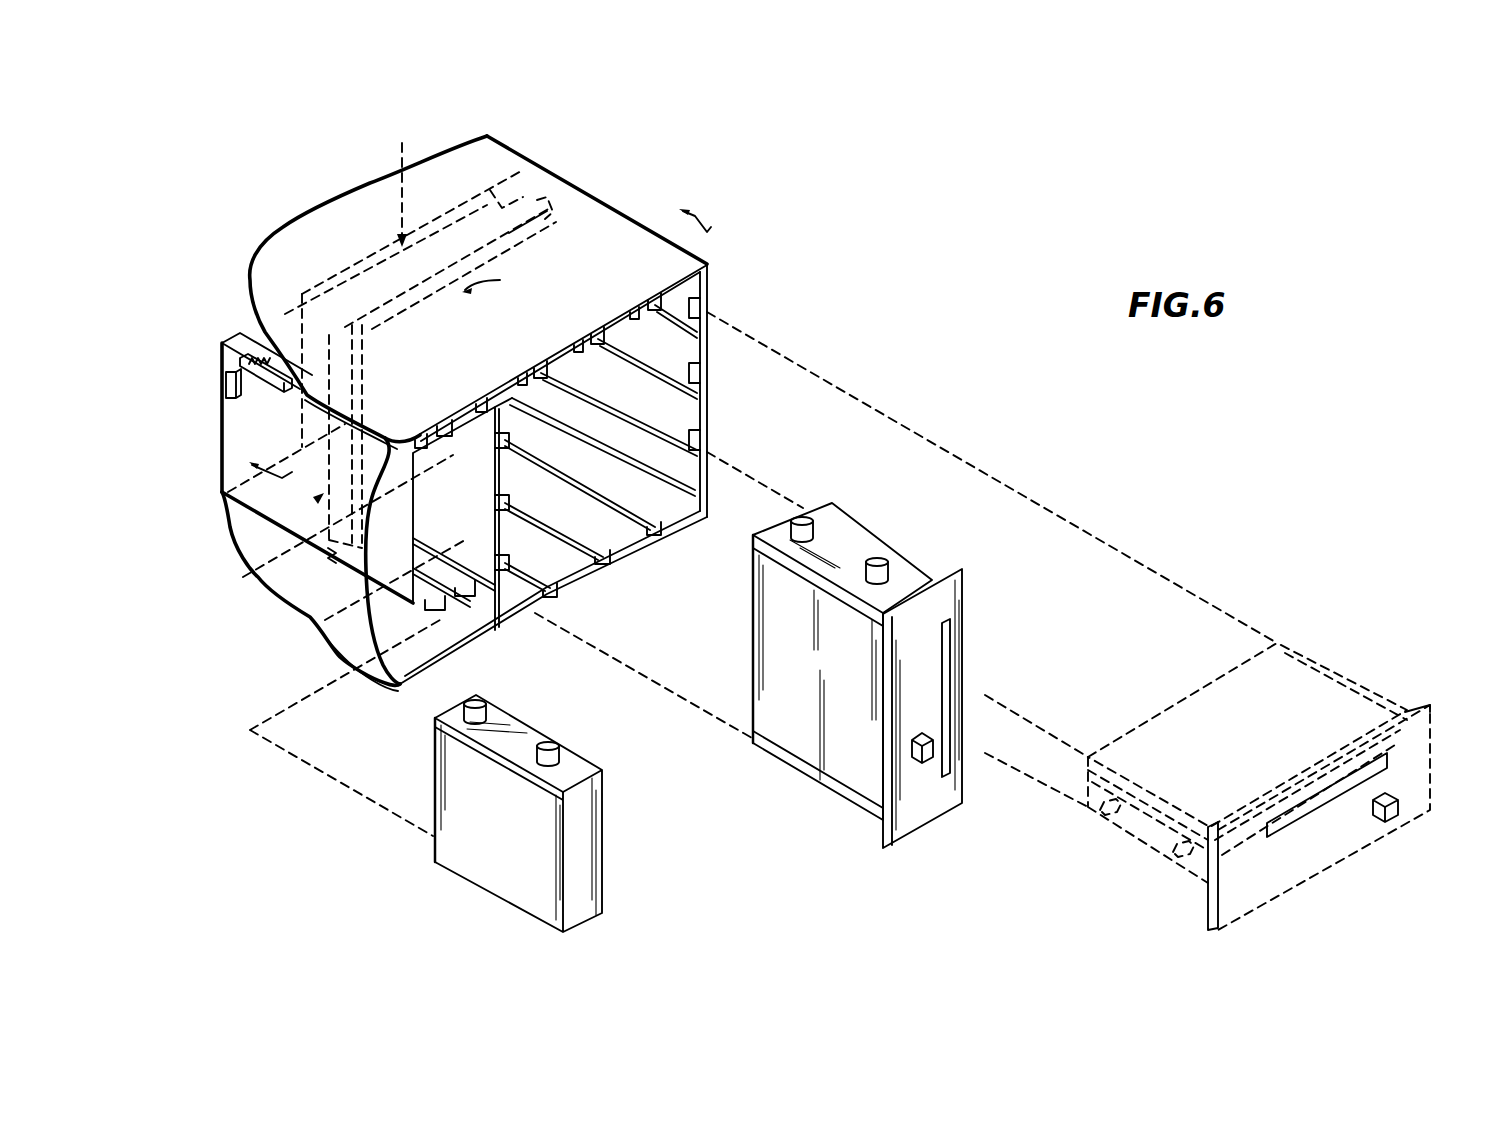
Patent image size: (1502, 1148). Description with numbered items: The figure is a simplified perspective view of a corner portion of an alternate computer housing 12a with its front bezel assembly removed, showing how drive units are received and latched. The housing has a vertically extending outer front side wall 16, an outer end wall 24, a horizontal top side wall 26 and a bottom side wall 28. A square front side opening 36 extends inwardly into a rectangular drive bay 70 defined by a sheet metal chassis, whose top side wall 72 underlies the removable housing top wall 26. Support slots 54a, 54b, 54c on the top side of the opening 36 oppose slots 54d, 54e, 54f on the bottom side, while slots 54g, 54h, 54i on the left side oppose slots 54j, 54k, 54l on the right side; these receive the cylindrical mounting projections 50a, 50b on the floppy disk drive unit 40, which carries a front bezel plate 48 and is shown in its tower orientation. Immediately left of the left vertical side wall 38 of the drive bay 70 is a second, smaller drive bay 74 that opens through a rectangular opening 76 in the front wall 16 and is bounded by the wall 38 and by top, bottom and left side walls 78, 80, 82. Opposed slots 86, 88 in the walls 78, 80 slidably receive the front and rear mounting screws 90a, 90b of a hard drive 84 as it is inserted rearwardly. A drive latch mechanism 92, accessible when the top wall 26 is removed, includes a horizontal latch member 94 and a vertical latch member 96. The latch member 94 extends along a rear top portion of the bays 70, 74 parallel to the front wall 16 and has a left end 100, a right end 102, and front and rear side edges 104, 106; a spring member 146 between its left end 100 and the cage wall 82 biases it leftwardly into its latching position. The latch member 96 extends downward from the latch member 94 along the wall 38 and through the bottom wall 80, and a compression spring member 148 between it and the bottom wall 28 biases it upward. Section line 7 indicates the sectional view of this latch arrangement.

The computer housing 12a is at (553, 150).
The top side wall 26 is at (370, 203).
The drive latch mechanism 92 is at (400, 181).
The rear side edge 106 is at (490, 199).
The front side edge 104 is at (514, 248).
The right end 102 is at (541, 211).
The top side wall 72 is at (606, 219).
The drive bay 70 is at (640, 199).
The section line 7- 7 is at (471, 335).
The latch member 94 is at (497, 278).
The end wall 24 is at (710, 347).
The front side opening 36 is at (682, 416).
The front side wall 16 is at (390, 686).
The slot 54a is at (545, 368).
The slot 54b is at (600, 336).
The slot 54c is at (662, 303).
The slot 54d is at (547, 603).
The slot 54e is at (603, 558).
The slot 54f is at (650, 537).
The slot 54g is at (522, 442).
The slot 54h is at (507, 510).
The slot 54i is at (505, 576).
The slot 54j is at (705, 312).
The slot 54k is at (702, 380).
The slot 54l is at (702, 450).
The bottom side wall 80 is at (432, 540).
The left vertical side wall 38 is at (502, 476).
The drive bay 74 is at (218, 448).
The top side wall 78 is at (288, 382).
The left end 100 is at (226, 382).
The spring member 146 is at (255, 362).
The compression spring member 148 is at (336, 563).
The left side wall 82 is at (242, 532).
The latch member 96 is at (256, 577).
The bottom side wall 28 is at (328, 636).
The opening 76 is at (492, 588).
The slot 88 is at (476, 400).
The slot 86 is at (452, 428).
The floppy disk drive unit 40 is at (887, 519).
The bezel plate 48 is at (945, 608).
The mounting projection 50a is at (883, 562).
The mounting projection 50b is at (806, 518).
The hard drive 84 is at (615, 843).
The front mounting screw 90a is at (548, 760).
The rear mounting screw 90b is at (490, 708).